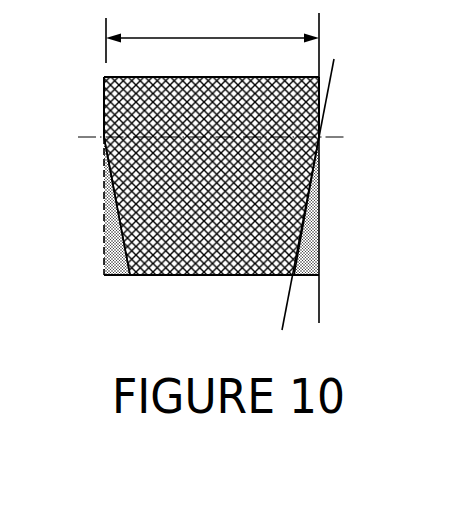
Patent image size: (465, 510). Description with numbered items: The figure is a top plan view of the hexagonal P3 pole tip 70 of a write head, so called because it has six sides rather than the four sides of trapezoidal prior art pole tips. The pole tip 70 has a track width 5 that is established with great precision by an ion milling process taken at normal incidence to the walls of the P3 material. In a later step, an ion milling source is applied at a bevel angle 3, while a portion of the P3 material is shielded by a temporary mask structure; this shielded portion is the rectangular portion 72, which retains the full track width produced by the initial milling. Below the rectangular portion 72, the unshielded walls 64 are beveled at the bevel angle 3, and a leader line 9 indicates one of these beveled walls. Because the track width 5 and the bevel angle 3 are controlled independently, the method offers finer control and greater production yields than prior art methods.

The bevel angle 3 is at (244, 285).
The track width 5 is at (236, 40).
The flank face of cutting insert 9 is at (320, 194).
The walls 64 is at (104, 212).
The hexagonal P3 pole tip 70 is at (107, 187).
The rectangular portion 72 is at (104, 87).